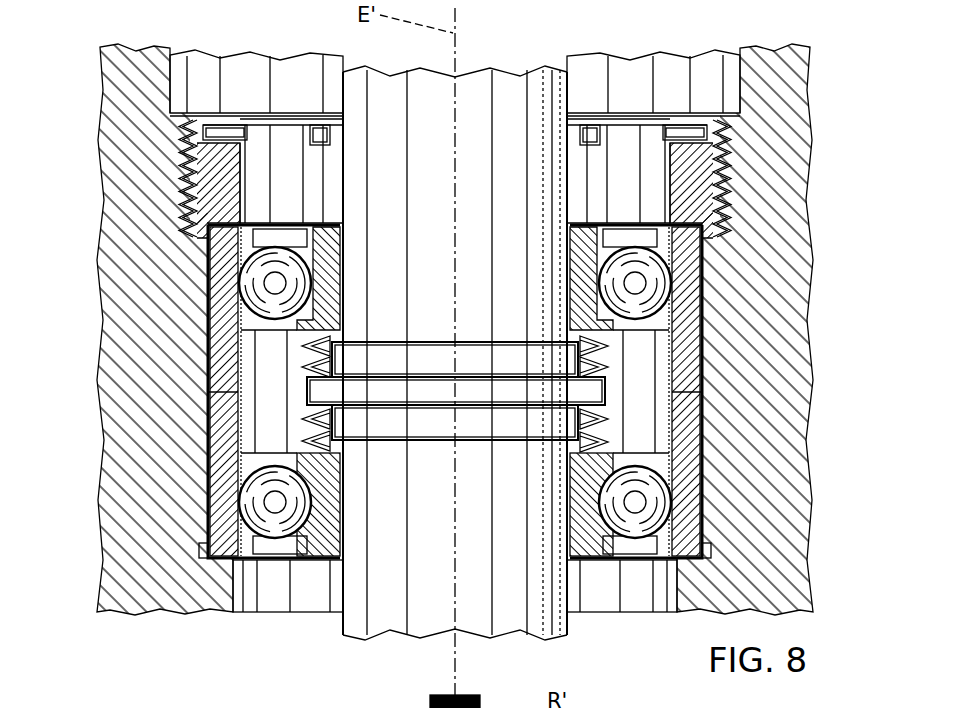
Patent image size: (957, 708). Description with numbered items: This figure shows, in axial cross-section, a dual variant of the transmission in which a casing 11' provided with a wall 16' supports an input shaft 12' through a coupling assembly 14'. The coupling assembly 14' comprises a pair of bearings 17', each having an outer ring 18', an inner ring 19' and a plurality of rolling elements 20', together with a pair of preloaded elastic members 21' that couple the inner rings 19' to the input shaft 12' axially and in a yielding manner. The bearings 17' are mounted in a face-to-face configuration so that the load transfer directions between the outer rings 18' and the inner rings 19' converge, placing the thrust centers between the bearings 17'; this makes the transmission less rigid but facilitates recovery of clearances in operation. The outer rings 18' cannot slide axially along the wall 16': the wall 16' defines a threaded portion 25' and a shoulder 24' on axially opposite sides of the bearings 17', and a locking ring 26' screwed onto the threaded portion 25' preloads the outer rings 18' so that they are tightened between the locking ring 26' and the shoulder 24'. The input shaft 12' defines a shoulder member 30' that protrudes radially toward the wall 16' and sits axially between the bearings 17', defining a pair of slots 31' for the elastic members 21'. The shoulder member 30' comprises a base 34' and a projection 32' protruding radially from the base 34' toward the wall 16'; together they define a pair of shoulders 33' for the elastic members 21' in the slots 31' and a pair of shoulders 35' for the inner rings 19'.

The casing 11' is at (791, 329).
The input shaft 12' is at (480, 379).
The coupling assembly 14' is at (455, 281).
The wall 16' is at (137, 329).
The bearings 17' is at (455, 633).
The outer rings 18' is at (363, 391).
The inner rings 19' is at (455, 391).
The rolling elements 20' is at (458, 458).
The preloaded elastic members 21' is at (188, 404).
The shoulder 24' is at (534, 513).
The threaded portion 25' is at (774, 179).
The locking ring 26' is at (138, 176).
The shoulder member 30' is at (590, 365).
The slots 31' is at (462, 383).
The projection 32' is at (322, 396).
The shoulders for the elastic members 33' is at (739, 369).
The base 34' is at (449, 370).
The shoulders for the inner rings 35' is at (455, 391).